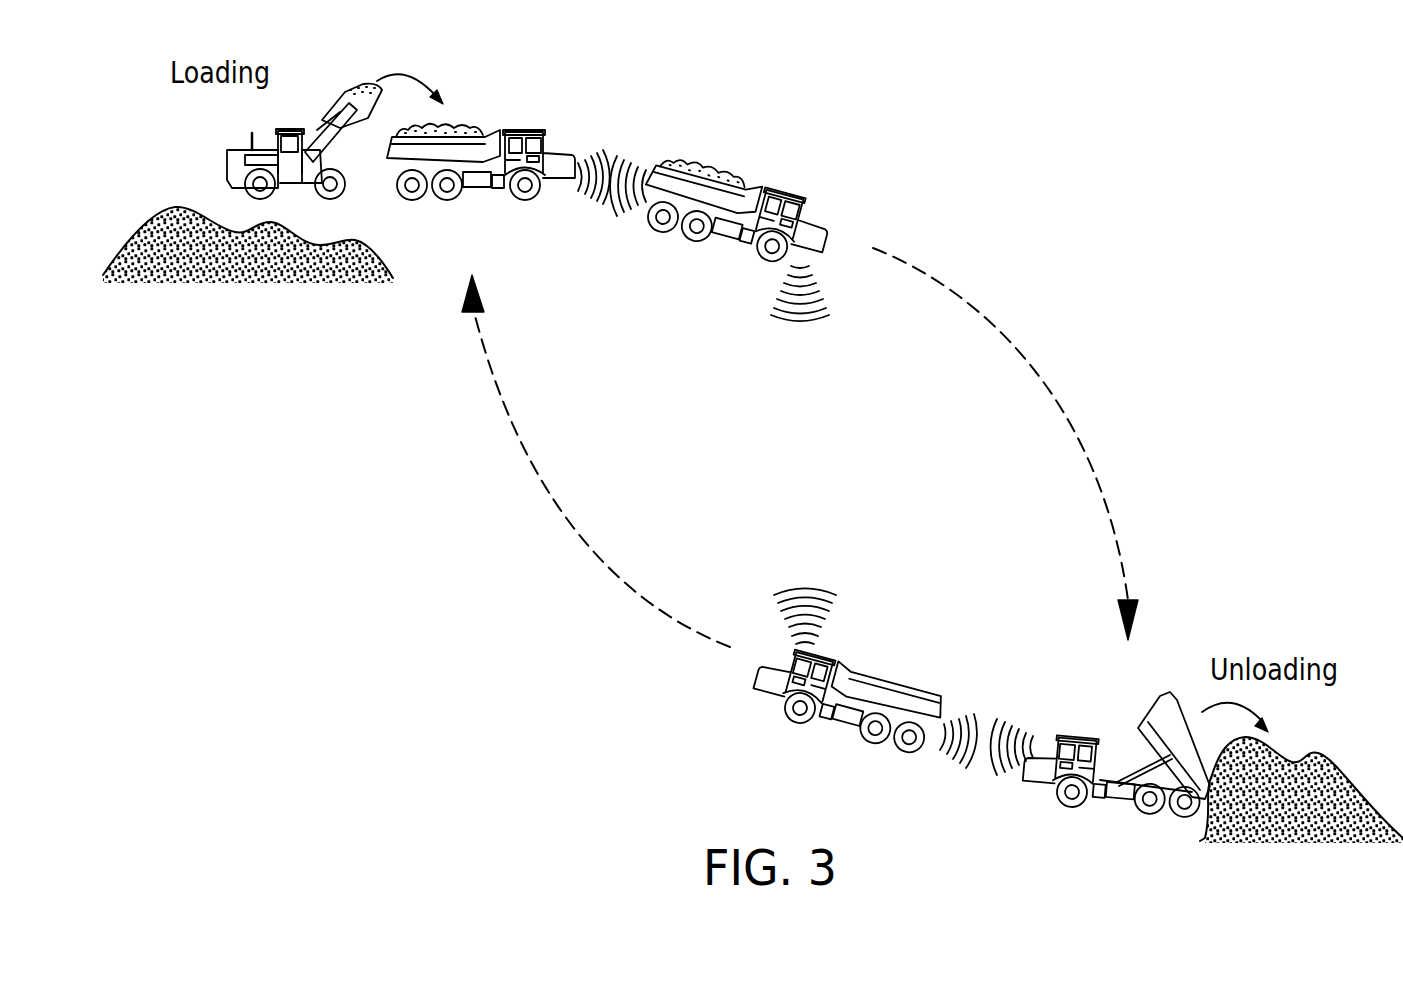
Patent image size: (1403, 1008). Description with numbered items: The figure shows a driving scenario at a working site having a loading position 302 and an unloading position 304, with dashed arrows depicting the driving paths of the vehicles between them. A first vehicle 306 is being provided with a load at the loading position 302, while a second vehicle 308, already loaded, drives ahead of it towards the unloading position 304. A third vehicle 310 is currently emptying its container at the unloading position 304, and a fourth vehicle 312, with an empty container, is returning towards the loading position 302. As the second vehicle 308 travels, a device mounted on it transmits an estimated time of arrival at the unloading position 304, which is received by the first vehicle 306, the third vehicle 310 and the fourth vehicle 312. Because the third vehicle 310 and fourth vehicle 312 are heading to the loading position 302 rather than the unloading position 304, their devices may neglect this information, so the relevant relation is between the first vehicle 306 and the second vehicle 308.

The loading position 302 is at (243, 283).
The unloading position 304 is at (1302, 830).
The first vehicle 306 is at (486, 146).
The second vehicle 308 is at (750, 192).
The third vehicle 310 is at (1107, 738).
The fourth vehicle 312 is at (825, 702).